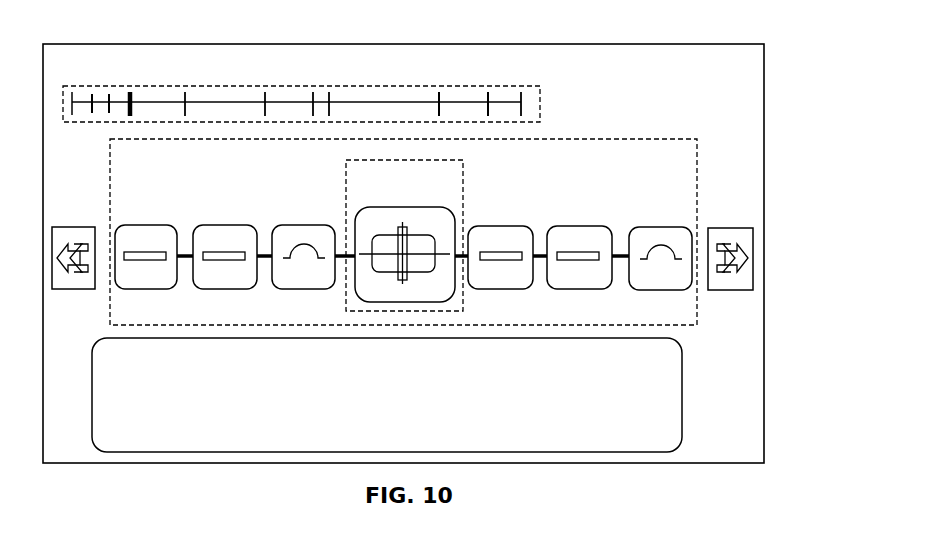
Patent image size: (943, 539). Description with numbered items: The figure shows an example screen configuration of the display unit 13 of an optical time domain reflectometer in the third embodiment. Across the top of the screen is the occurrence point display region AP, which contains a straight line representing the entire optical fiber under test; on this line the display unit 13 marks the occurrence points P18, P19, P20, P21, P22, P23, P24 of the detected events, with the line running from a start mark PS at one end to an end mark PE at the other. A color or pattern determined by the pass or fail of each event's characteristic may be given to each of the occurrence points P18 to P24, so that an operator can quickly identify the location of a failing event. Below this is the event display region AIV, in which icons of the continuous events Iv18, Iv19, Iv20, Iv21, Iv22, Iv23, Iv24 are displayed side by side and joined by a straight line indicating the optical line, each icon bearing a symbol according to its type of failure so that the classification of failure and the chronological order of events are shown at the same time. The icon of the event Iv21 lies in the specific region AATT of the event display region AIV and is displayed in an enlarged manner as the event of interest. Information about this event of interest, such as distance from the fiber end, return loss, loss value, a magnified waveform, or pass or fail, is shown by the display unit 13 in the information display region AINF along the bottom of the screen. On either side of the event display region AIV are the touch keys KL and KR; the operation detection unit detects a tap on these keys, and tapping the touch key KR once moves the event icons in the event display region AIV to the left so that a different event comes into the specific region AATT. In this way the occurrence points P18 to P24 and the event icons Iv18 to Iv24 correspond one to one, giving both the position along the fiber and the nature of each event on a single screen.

The display unit 13 is at (764, 120).
The occurrence point display region AP is at (542, 110).
The start position PS is at (73, 91).
The occurrence point P18 is at (131, 91).
The occurrence point P19 is at (186, 91).
The occurrence point P20 is at (266, 91).
The occurrence point P21 is at (314, 91).
The occurrence point P22 is at (330, 91).
The occurrence point P23 is at (440, 91).
The occurrence point P24 is at (489, 91).
The end position PE is at (522, 91).
The event display region AIV is at (698, 152).
The specific region AATT is at (464, 182).
The information display region AINF is at (682, 375).
The touch key KL is at (74, 222).
The touch key KR is at (727, 226).
The event icon Iv18 is at (146, 224).
The event icon Iv19 is at (221, 224).
The event icon Iv20 is at (295, 224).
The event icon Iv21 is at (422, 206).
The event icon Iv22 is at (502, 225).
The event icon Iv23 is at (578, 225).
The event icon Iv24 is at (651, 226).